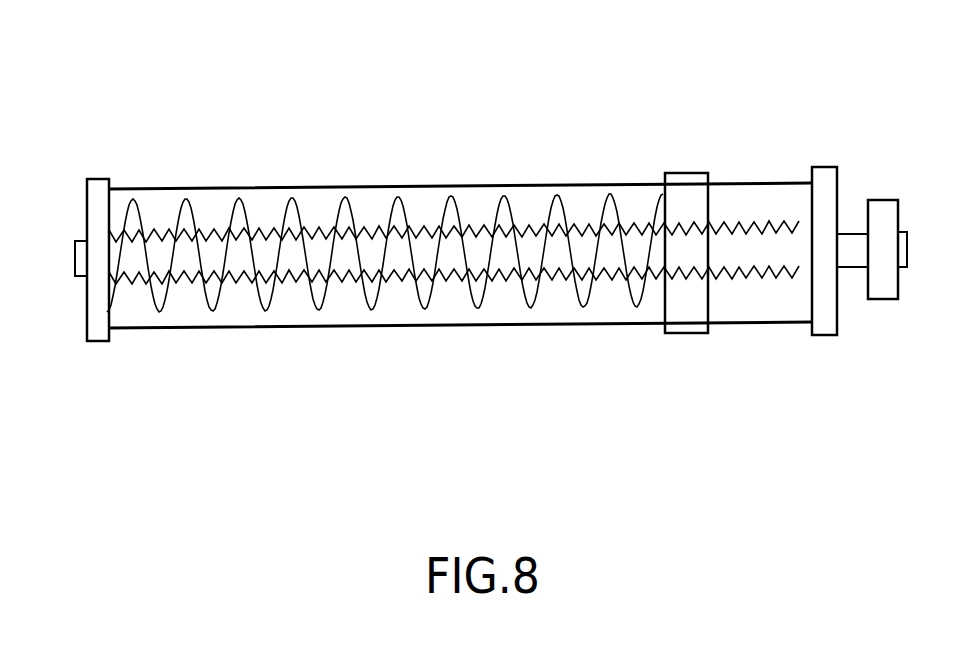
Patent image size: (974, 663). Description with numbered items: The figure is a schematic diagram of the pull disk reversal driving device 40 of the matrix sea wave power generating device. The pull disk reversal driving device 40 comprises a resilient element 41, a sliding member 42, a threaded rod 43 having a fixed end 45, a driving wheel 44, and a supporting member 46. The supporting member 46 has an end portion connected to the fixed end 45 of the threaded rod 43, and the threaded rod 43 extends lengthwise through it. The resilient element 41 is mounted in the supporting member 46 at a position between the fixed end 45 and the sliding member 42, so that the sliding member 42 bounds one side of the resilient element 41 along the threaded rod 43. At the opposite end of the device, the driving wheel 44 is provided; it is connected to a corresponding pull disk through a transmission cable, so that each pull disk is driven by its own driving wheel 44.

The pull disk reversal driving device 40 is at (425, 342).
The resilient element 41 is at (303, 203).
The sliding member 42 is at (688, 180).
The threaded rod 43 is at (752, 277).
The driving wheel 44 is at (883, 288).
The fixed end 45 is at (102, 330).
The supporting member 46 is at (477, 183).